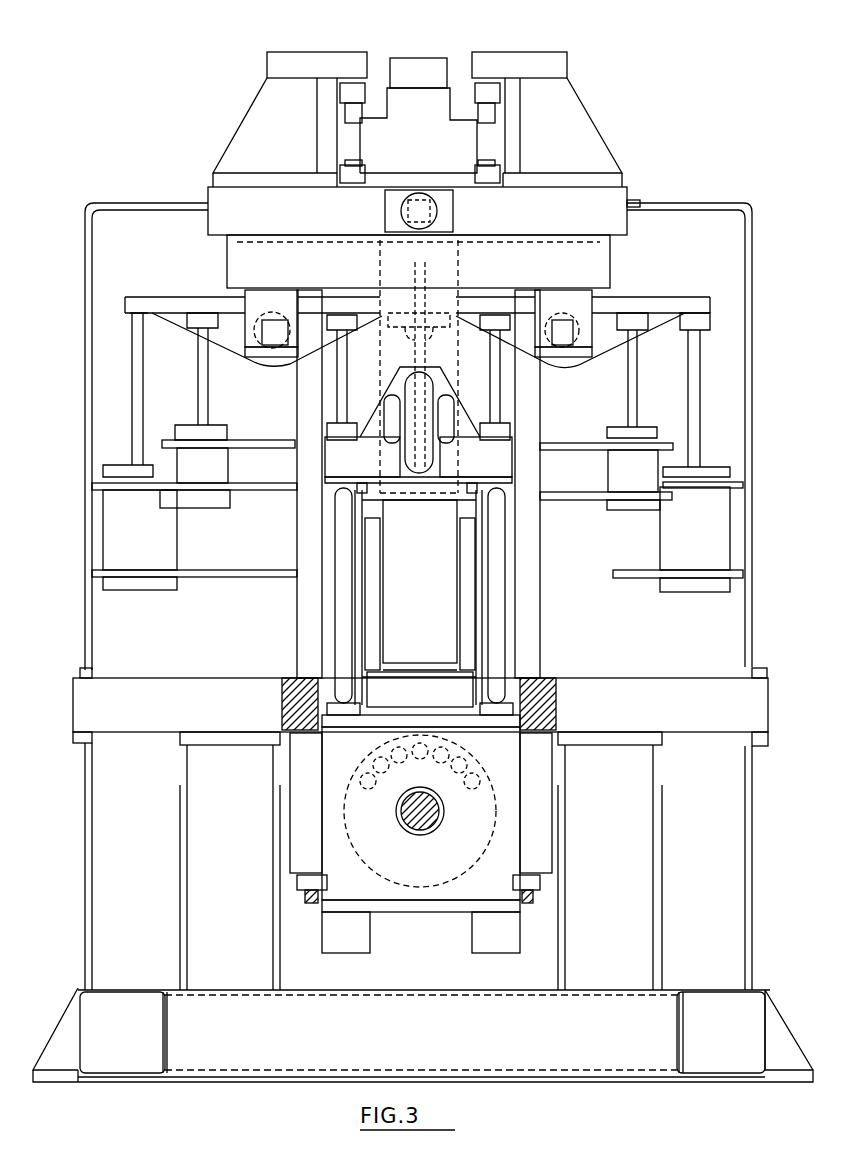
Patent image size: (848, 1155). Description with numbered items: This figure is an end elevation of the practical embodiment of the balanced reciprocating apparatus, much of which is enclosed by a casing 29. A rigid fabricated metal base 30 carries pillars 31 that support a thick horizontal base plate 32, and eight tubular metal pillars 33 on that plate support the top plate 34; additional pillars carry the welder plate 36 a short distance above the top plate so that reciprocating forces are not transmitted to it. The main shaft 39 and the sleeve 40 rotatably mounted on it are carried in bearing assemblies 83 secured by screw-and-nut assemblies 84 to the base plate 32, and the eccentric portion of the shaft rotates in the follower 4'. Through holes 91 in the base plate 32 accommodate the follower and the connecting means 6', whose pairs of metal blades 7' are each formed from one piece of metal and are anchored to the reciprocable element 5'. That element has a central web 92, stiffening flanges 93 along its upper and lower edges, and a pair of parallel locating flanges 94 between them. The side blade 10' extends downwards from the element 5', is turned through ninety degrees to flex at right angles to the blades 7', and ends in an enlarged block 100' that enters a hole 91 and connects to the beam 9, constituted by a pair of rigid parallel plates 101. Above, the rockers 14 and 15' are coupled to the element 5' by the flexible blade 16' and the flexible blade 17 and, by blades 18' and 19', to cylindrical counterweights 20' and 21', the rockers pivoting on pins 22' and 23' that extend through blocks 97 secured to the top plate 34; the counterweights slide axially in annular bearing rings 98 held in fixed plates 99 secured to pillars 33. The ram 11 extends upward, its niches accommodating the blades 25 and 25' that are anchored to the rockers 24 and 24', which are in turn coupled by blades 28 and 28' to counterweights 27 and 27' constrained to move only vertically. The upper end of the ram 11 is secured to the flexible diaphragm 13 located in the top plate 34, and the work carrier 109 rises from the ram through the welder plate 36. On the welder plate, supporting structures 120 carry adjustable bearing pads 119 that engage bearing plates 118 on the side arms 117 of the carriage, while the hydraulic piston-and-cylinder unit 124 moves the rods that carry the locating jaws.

The work carrier 109 is at (427, 70).
The supporting structures 120 is at (287, 60).
The side arms 117 is at (350, 140).
The bearing pads 119 is at (350, 110).
The bearing plates 118 is at (353, 167).
The hydraulic piston-and-cylinder unit 124 is at (440, 208).
The welder plate 36 is at (607, 200).
The top plate 34 is at (245, 270).
The flexible diaphragm 13 is at (305, 250).
The ram 11 is at (460, 285).
The blocks 97 is at (253, 313).
The rocker 24 is at (128, 355).
The rocker 24' is at (696, 364).
The flexible blade 18' is at (186, 376).
The flexible blade 25 is at (346, 377).
The flexible blade 25' is at (486, 377).
The rocker 15' is at (624, 375).
The rocker 14 is at (233, 316).
The flexible blade 17 is at (500, 390).
The flexible blade 16' is at (273, 373).
The pivot pin 22' is at (236, 384).
The pivot pin 23' is at (621, 273).
The flexible blade 28 is at (114, 376).
The flexible blade 28' is at (718, 370).
The flexible blade 19' is at (660, 360).
The reciprocable element 5' is at (459, 430).
The central web 92 is at (378, 455).
The stiffening flanges 93 is at (512, 450).
The locating flanges 94 is at (435, 447).
The tubular metal pillars 33 is at (312, 631).
The annular bearing rings 98 is at (230, 438).
The fixed plates 99 is at (263, 495).
The counterweight 20' is at (228, 465).
The counterweight 21' is at (608, 471).
The counterweight 27 is at (163, 540).
The counterweight 27' is at (665, 539).
The metal blades 7' is at (408, 601).
The beam 9 is at (468, 593).
The plates 101 is at (468, 553).
The side blade 10' is at (420, 585).
The enlarged block 100' is at (399, 716).
The connecting means 6' is at (553, 593).
The through holes 91 is at (557, 697).
The base plate 32 is at (122, 707).
The pillars 31 is at (208, 930).
The follower 4' is at (379, 834).
The bearing assemblies 83 is at (538, 852).
The screw-and-nut assemblies 84 is at (535, 893).
The main shaft 39 is at (428, 822).
The sleeve 40 is at (400, 817).
The casing 29 is at (87, 632).
The base 30 is at (105, 993).